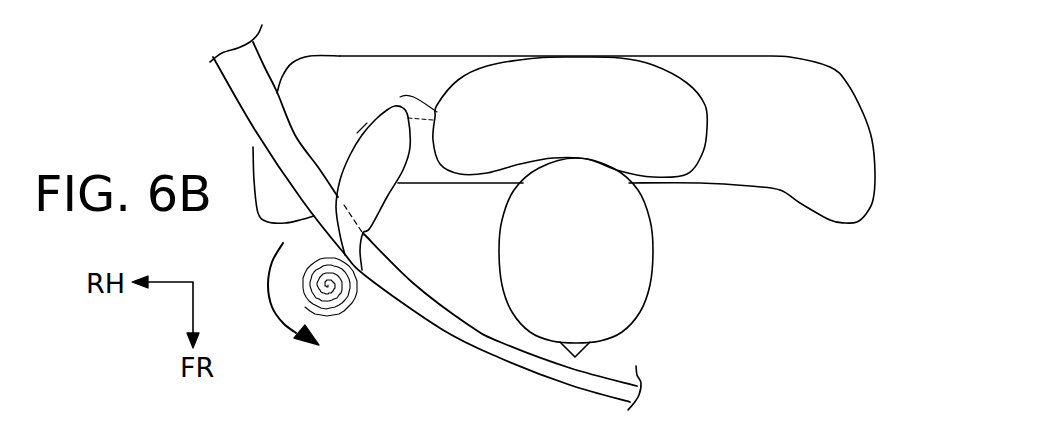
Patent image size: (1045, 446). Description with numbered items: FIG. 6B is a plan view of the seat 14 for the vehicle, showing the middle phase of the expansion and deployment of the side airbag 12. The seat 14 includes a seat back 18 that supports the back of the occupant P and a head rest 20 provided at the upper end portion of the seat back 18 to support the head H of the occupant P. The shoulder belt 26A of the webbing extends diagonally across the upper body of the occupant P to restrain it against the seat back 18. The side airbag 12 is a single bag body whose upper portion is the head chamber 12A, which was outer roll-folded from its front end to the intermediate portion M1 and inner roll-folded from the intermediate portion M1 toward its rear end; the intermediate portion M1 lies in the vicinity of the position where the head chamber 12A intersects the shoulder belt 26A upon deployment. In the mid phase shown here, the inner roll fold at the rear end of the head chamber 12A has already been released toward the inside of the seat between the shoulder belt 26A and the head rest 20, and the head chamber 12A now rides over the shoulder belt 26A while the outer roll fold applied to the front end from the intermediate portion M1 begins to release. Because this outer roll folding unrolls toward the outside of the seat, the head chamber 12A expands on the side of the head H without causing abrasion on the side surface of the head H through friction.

The side airbag 12 is at (388, 108).
The head chamber 12A is at (338, 207).
The seat for the vehicle 14 is at (601, 167).
The seat back 18 is at (860, 143).
The head rest 20 is at (707, 127).
The shoulder belt 26A is at (443, 332).
The intermediate portion M1 is at (352, 247).
The head H is at (653, 247).
The occupant P is at (624, 267).